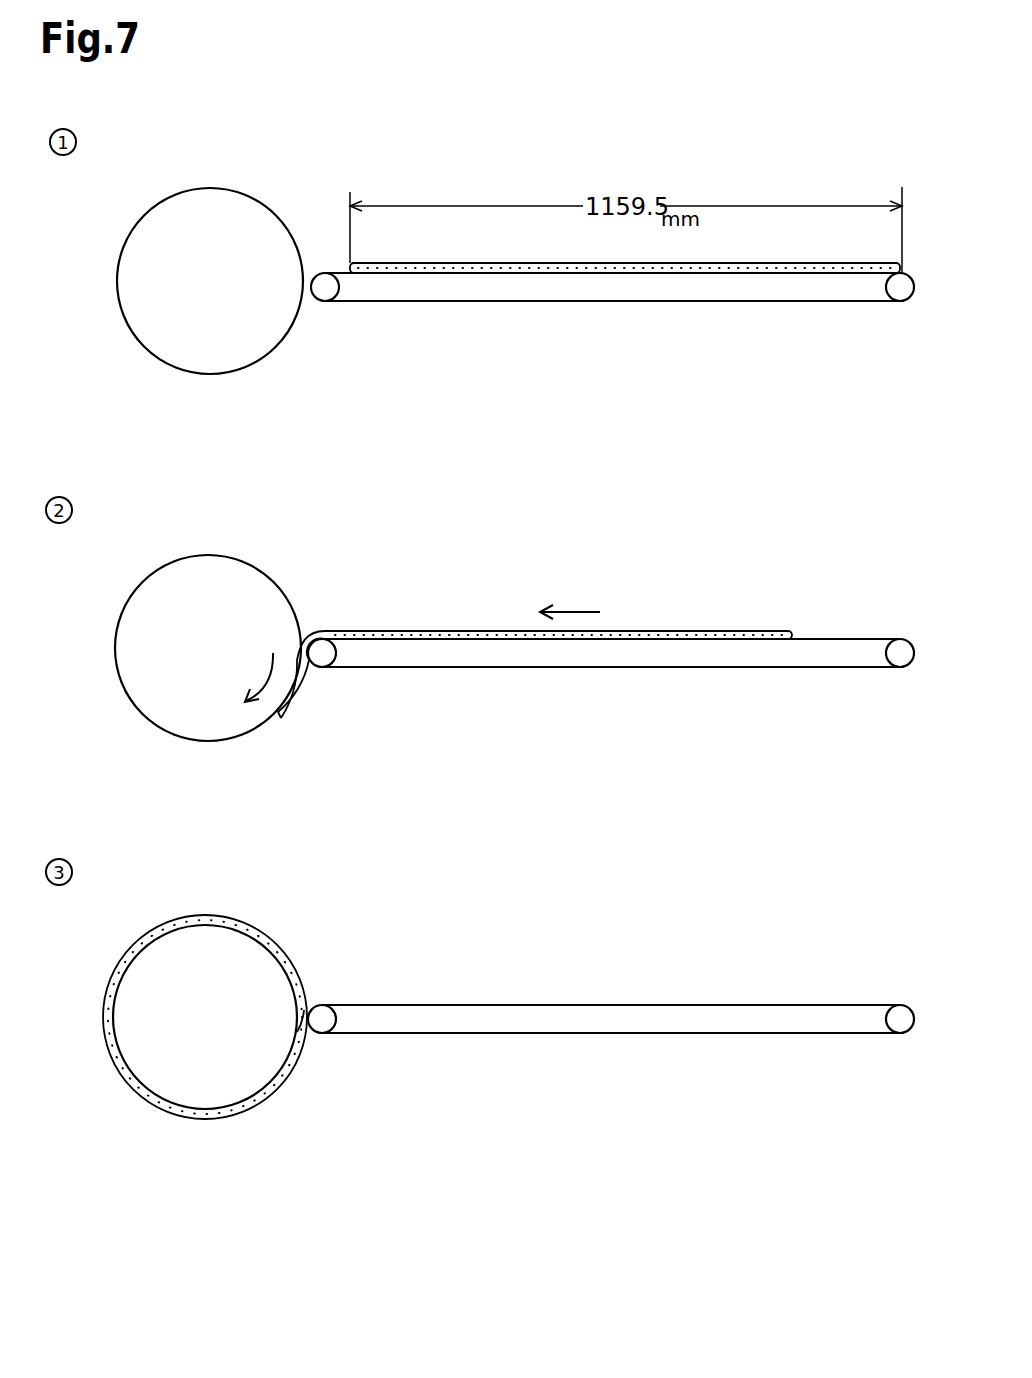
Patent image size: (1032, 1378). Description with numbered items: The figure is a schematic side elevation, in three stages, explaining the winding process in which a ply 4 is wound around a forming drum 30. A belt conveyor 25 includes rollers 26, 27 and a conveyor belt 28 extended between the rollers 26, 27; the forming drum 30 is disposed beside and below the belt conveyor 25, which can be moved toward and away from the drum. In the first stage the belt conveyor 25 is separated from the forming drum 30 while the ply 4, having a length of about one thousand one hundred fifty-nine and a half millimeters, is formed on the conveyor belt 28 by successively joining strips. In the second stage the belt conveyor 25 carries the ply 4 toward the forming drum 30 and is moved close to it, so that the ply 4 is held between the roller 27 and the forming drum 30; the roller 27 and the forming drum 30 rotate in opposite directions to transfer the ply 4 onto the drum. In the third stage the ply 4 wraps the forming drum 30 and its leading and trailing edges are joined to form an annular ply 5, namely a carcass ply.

The ply 4 is at (505, 262).
The annular ply 5 is at (117, 957).
The belt conveyor 25 is at (611, 703).
The roller 26 is at (900, 290).
The roller 27 is at (323, 290).
The conveyor belt 28 is at (488, 302).
The forming drum 30 is at (211, 378).